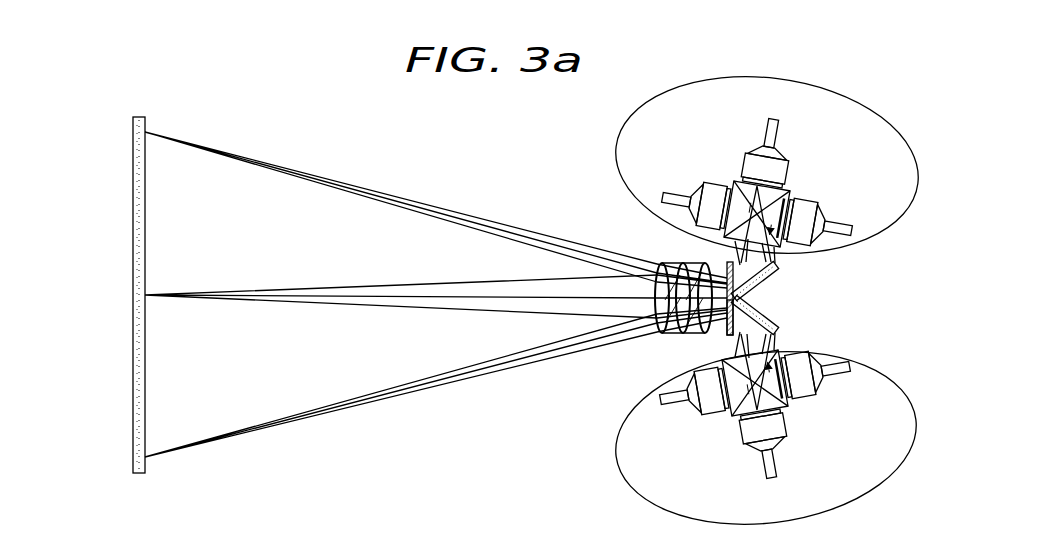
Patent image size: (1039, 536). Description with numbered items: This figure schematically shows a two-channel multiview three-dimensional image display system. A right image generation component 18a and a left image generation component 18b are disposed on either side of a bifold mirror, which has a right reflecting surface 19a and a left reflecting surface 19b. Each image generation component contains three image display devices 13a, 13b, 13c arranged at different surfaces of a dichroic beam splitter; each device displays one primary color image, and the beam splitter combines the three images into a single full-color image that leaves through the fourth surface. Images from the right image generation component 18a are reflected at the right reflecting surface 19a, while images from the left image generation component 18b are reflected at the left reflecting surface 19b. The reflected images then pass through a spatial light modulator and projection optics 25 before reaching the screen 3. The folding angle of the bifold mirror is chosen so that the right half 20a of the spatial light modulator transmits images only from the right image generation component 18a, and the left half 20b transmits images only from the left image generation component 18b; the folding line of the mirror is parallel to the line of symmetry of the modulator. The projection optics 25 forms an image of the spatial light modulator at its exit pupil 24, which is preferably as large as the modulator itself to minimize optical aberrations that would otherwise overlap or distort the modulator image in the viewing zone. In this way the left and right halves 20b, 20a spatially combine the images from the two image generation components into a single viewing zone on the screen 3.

The screen 3 is at (135, 130).
The image display device 13a is at (823, 208).
The image display device 13b is at (780, 156).
The image display device 13c is at (692, 188).
The right image generation component 18a is at (918, 175).
The left image generation component 18b is at (918, 418).
The right reflecting surface 19a is at (777, 268).
The left reflecting surface 19b is at (777, 330).
The right half of the spatial light modulator 20a is at (730, 262).
The left half of the spatial light modulator 20b is at (727, 335).
The exit pupil 24 is at (658, 324).
The projection optics 25 is at (678, 328).